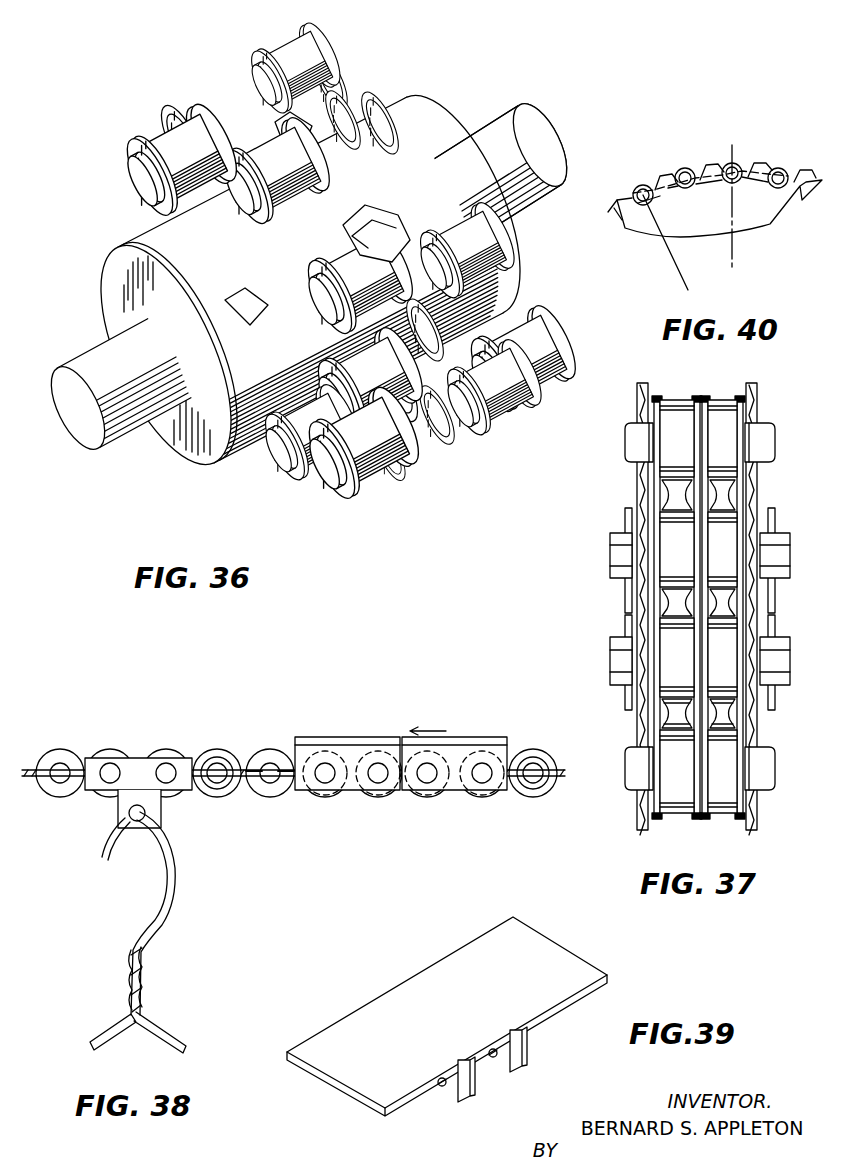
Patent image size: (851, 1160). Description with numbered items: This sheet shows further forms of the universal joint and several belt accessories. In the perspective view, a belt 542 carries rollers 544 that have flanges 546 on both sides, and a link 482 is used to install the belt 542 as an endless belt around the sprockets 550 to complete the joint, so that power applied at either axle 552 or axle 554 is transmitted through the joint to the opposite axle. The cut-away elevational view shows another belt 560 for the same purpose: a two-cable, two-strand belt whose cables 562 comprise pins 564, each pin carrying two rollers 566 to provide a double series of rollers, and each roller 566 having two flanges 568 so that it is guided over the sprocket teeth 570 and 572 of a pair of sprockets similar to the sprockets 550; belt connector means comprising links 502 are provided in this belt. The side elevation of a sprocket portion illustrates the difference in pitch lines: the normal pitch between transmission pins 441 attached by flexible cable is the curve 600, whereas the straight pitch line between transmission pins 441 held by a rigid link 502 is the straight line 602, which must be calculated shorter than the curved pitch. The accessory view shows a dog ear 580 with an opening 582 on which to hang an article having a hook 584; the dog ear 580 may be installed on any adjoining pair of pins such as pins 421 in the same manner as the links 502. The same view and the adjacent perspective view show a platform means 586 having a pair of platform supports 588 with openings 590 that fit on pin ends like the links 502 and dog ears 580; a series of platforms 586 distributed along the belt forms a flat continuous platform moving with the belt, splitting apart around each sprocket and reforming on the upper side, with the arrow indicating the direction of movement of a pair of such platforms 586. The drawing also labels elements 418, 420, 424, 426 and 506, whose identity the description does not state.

In FIG. 36, the belt 542 is at (223, 80).
In FIG. 36, the flanges 546 is at (262, 60).
In FIG. 36, the rollers 544 is at (382, 120).
In FIG. 36, the link 482 is at (370, 213).
In FIG. 36, the sprockets 550 is at (433, 170).
In FIG. 36, the axle 552 is at (125, 445).
In FIG. 36, the axle 554 is at (528, 196).
In FIG. 40, the link 502 is at (643, 185).
In FIG. 37, the link 502 is at (626, 603).
In FIG. 40, the straight pitch line 602 is at (710, 285).
In FIG. 40, the transmission pins 441 is at (685, 168).
In FIG. 40, the curve 600 is at (732, 160).
In FIG. 37, the rollers 566 is at (670, 400).
In FIG. 37, the flanges 568 is at (696, 400).
In FIG. 37, the pins 564 is at (762, 432).
In FIG. 37, the cables 562 is at (640, 482).
In FIG. 37, the belt 560 is at (630, 491).
In FIG. 37, the guide roller 506 is at (612, 538).
In FIG. 37, the sprocket teeth 570 is at (666, 713).
In FIG. 37, the sprocket teeth 572 is at (728, 713).
In FIG. 38, the chain 418 is at (83, 748).
In FIG. 38, the pins 421 is at (110, 762).
In FIG. 38, the dog ear 580 is at (140, 760).
In FIG. 38, the roller 426 is at (228, 752).
In FIG. 38, the link 424 is at (250, 756).
In FIG. 38, the cable 420 is at (243, 786).
In FIG. 38, the opening 582 is at (129, 813).
In FIG. 38, the hook 584 is at (174, 880).
In FIG. 38, the platform means 586 is at (366, 737).
In FIG. 39, the platform means 586 is at (438, 1012).
In FIG. 38, the platform supports 588 is at (350, 792).
In FIG. 39, the platform supports 588 is at (524, 1054).
In FIG. 39, the openings 590 is at (494, 1062).